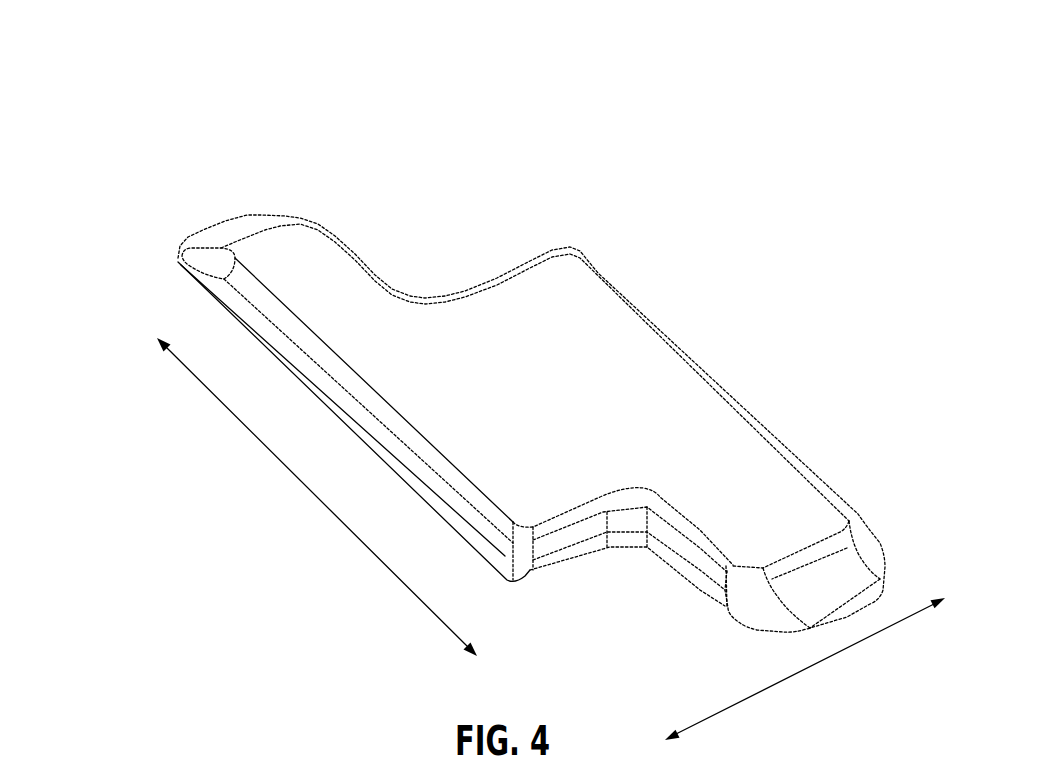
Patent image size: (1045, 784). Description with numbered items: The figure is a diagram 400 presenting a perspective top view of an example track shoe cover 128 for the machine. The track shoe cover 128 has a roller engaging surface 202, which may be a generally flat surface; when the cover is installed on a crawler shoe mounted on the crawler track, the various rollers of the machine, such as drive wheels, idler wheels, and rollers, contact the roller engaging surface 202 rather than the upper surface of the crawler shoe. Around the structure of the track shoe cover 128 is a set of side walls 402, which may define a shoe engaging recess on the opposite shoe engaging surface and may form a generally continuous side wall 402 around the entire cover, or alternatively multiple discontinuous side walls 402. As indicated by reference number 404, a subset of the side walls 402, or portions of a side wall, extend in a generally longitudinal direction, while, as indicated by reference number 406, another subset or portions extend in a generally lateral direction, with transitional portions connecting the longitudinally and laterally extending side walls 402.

The diagram 400 is at (117, 86).
The track shoe cover 128 is at (183, 198).
The roller engaging surface 202 is at (578, 374).
The set of side walls 402 is at (372, 445).
The longitudinally extending side walls 404 is at (331, 511).
The laterally extending side walls 406 is at (746, 699).